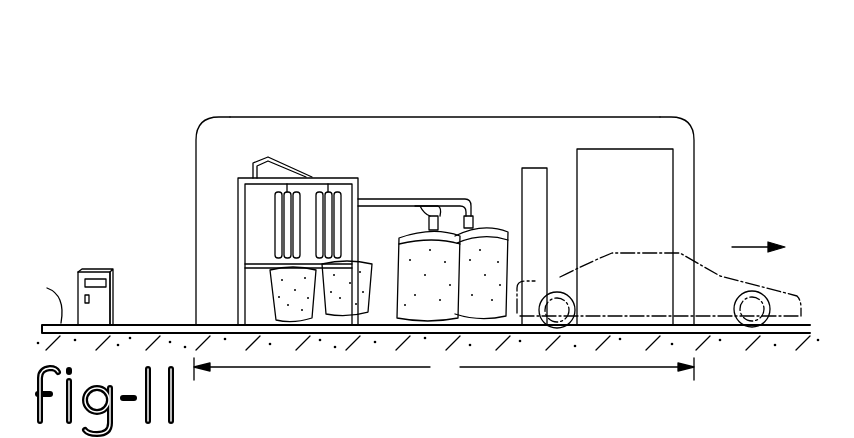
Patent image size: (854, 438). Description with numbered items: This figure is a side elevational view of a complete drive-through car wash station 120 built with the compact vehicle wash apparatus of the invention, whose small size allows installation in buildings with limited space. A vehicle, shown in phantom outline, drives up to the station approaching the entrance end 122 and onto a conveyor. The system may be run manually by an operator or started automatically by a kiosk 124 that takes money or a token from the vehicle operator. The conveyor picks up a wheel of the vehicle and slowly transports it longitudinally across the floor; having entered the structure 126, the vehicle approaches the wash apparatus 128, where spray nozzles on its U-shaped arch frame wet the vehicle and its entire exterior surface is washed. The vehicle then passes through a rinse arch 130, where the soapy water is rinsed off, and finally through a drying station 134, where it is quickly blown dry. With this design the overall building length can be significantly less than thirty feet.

The car wash station 120 is at (395, 62).
The entrance end 122 is at (193, 208).
The kiosk 124 is at (92, 270).
The structure 126 is at (457, 117).
The wash apparatus 128 is at (347, 177).
The rinse arch 130 is at (536, 167).
The drying station 134 is at (597, 148).